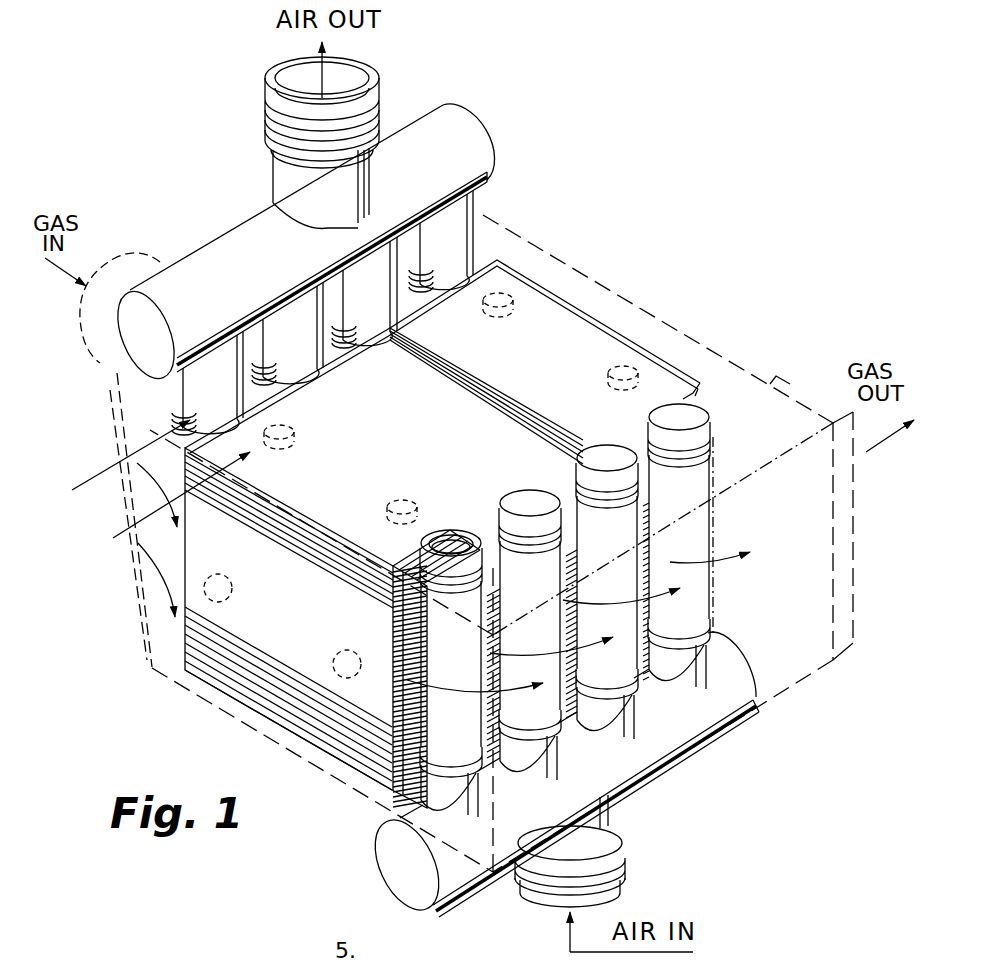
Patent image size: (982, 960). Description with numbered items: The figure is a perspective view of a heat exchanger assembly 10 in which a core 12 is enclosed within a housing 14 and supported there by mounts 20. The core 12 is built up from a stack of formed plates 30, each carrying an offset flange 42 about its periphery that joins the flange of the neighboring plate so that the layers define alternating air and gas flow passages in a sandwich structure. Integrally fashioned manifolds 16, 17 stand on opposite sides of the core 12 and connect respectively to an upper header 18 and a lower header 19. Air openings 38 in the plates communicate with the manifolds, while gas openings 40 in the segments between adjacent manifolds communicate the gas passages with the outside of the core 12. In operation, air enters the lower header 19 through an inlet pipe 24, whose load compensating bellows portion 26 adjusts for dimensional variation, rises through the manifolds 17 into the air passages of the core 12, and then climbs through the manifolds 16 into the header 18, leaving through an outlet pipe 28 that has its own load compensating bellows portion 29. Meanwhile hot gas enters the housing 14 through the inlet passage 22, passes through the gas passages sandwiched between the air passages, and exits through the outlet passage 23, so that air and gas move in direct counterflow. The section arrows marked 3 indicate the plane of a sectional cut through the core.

The section line 3- 3 is at (147, 518).
The heat exchanger assembly 10 is at (690, 154).
The core 12 is at (583, 333).
The housing 14 is at (700, 338).
The manifolds 16 is at (297, 383).
The manifolds 17 is at (595, 448).
The header 18 is at (470, 122).
The header 19 is at (729, 646).
The mounts 20 is at (508, 312).
The inlet passage 22 is at (133, 263).
The outlet passage 23 is at (778, 378).
The inlet pipe 24 is at (622, 886).
The load compensating bellows portion 26 is at (622, 829).
The outlet pipe 28 is at (272, 66).
The load compensating bellows portion 29 is at (372, 98).
The formed plates 30 is at (220, 660).
The air openings 38 is at (446, 540).
The gas openings 40 is at (692, 394).
The offset flange 42 is at (522, 277).